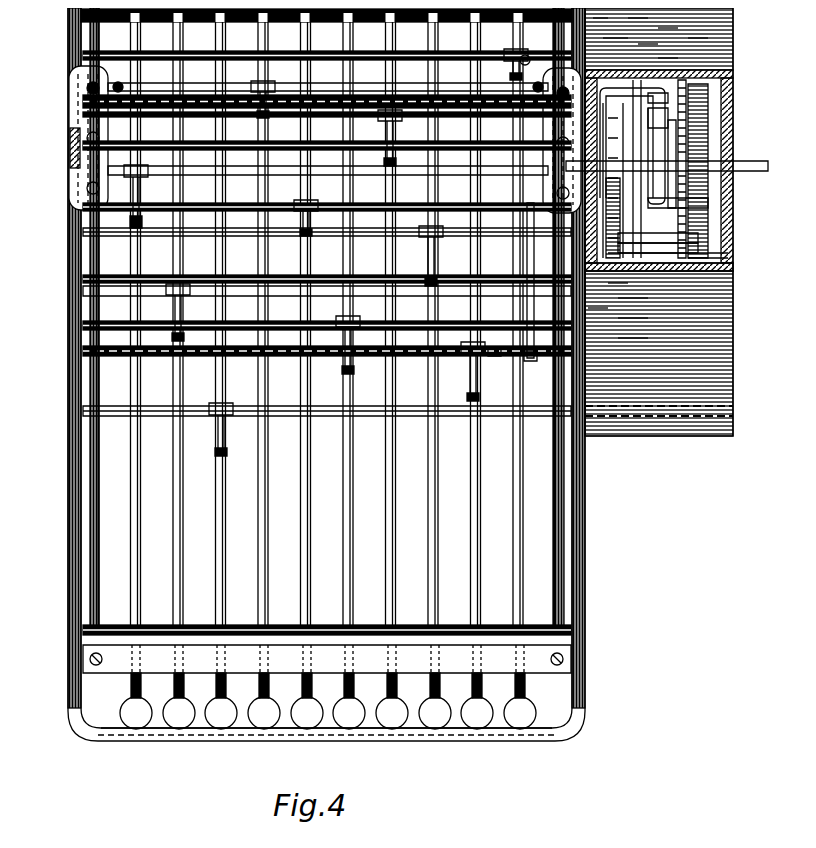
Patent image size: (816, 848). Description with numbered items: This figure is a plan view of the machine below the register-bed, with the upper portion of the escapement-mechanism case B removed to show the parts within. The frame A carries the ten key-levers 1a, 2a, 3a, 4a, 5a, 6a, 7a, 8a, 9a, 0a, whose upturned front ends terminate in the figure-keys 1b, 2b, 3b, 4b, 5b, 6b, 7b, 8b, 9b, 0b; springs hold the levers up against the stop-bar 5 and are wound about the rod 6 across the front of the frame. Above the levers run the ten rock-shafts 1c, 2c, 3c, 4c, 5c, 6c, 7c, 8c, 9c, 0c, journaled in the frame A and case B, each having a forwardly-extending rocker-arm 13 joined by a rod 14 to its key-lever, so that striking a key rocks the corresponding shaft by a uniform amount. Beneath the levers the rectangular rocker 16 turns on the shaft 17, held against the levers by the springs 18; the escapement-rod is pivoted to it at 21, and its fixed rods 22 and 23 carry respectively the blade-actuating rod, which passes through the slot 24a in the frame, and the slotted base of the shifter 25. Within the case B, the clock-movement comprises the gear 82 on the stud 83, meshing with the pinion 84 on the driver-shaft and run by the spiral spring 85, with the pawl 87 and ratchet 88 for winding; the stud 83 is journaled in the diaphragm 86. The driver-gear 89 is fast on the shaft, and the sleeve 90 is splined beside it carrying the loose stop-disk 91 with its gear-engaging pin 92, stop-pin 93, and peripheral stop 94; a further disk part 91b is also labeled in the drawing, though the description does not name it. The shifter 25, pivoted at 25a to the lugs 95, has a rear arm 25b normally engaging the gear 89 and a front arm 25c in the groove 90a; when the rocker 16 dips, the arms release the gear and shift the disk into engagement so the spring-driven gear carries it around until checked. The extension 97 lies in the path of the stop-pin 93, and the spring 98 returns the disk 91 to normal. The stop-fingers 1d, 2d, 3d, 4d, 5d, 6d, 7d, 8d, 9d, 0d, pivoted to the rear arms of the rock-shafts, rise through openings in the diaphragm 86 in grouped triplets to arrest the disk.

The frame A is at (577, 549).
The escapement-mechanism case B is at (668, 222).
The stop-bar 5 is at (556, 647).
The rod 6 is at (92, 720).
The rocker 16 is at (92, 617).
The rocker-arm 13 is at (468, 349).
The rod 14 is at (252, 100).
The shaft 17 is at (150, 240).
The springs 18 is at (116, 76).
The pivotal attachment 21 is at (322, 75).
The fixed rod 22 is at (327, 137).
The fixed rod 23 is at (546, 345).
The shifter 25 is at (519, 248).
The slot 24a is at (62, 140).
The key-lever 1a is at (150, 502).
The key-lever 2a is at (192, 502).
The key-lever 3a is at (234, 502).
The key-lever 4a is at (277, 502).
The key-lever 5a is at (320, 502).
The key-lever 6a is at (362, 502).
The key-lever 7a is at (405, 502).
The key-lever 8a is at (448, 502).
The key-lever 9a is at (490, 502).
The key-lever 0a is at (532, 502).
The figure-key 1b is at (128, 721).
The figure-key 2b is at (171, 721).
The figure-key 3b is at (213, 721).
The figure-key 4b is at (256, 721).
The figure-key 5b is at (299, 721).
The figure-key 6b is at (341, 721).
The figure-key 7b is at (384, 721).
The figure-key 8b is at (427, 721).
The figure-key 9b is at (469, 721).
The figure-key 0b is at (512, 721).
The rock-shaft 1c is at (180, 166).
The rock-shaft 2c is at (196, 278).
The rock-shaft 3c is at (232, 398).
The rock-shaft 4c is at (245, 74).
The rock-shaft 5c is at (310, 195).
The rock-shaft 6c is at (360, 312).
The rock-shaft 7c is at (372, 110).
The rock-shaft 8c is at (440, 221).
The rock-shaft 9c is at (486, 348).
The rock-shaft 0c is at (500, 45).
The stop-finger 1d is at (561, 101).
The stop-finger 5d is at (559, 133).
The stop-finger 8d is at (559, 176).
The stop-finger 2d is at (725, 265).
The stop-finger 3d is at (639, 308).
The stop-finger 6d is at (639, 326).
The stop-finger 9d is at (639, 342).
The stop-finger 7d is at (600, 16).
The stop-finger 4d is at (639, 16).
The stop-finger 0d is at (668, 22).
The gear 82 is at (698, 32).
The stud 83 is at (700, 156).
The pinion 84 is at (612, 135).
The spiral spring 85 is at (655, 95).
The diaphragm 86 is at (615, 262).
The spring-actuated pawl 87 is at (690, 186).
The ratchet 88 is at (700, 120).
The driver-gear 89 is at (603, 308).
The sleeve 90 is at (660, 105).
The groove 90a is at (662, 88).
The driver stop-disk 91 is at (636, 290).
The lever arm 91b is at (668, 54).
The gear-engaging pin 92 is at (648, 38).
The stop-pin 93 is at (725, 258).
The stop 94 is at (700, 195).
The lugs 95 is at (535, 185).
The extension 97 is at (725, 272).
The spring 98 is at (668, 130).
The pivot 25a is at (690, 240).
The rear arm 25b is at (613, 34).
The front arm 25c is at (690, 232).